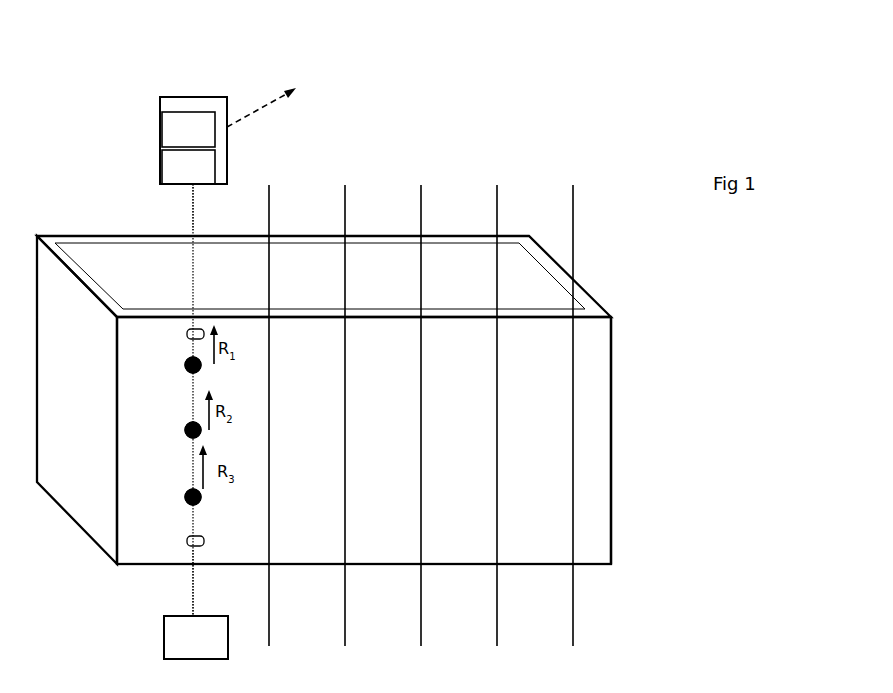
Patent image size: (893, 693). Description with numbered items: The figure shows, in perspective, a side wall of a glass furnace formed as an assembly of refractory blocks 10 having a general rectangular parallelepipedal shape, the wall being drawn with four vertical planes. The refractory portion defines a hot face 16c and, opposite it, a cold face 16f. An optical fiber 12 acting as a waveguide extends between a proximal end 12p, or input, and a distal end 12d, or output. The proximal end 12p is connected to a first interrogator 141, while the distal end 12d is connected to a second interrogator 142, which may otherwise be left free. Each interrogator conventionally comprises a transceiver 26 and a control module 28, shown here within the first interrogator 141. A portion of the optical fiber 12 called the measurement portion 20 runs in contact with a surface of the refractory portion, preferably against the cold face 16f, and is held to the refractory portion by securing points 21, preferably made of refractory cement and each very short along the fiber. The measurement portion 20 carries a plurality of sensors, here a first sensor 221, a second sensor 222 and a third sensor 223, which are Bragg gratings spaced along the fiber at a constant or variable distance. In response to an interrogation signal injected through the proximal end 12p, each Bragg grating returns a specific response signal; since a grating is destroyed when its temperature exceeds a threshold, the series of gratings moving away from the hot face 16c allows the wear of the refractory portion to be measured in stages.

The assembly of refractory blocks 10 is at (542, 253).
The optical fiber 12 is at (193, 592).
The proximal end 12p is at (193, 184).
The distal end 12d is at (193, 565).
The first interrogator 141 is at (191, 97).
The second interrogator 142 is at (196, 637).
The hot face 16c is at (377, 263).
The cold face 16f is at (594, 418).
The measurement portion 20 is at (193, 565).
The securing point 21 is at (186, 541).
The first sensor 221 is at (185, 365).
The second sensor 222 is at (166, 422).
The third sensor 223 is at (186, 495).
The transceiver 26 is at (188, 167).
The control module 28 is at (188, 129).